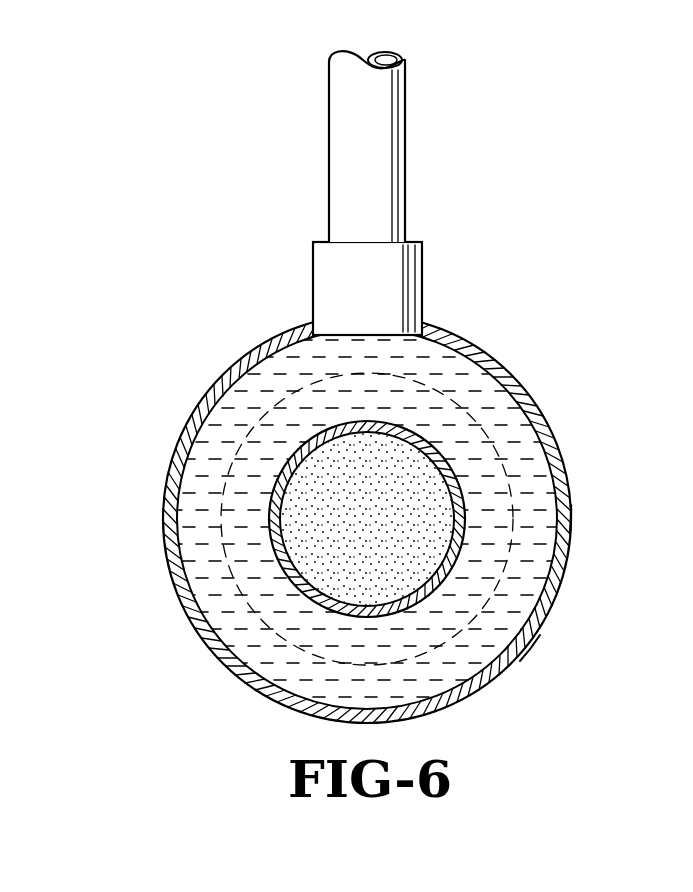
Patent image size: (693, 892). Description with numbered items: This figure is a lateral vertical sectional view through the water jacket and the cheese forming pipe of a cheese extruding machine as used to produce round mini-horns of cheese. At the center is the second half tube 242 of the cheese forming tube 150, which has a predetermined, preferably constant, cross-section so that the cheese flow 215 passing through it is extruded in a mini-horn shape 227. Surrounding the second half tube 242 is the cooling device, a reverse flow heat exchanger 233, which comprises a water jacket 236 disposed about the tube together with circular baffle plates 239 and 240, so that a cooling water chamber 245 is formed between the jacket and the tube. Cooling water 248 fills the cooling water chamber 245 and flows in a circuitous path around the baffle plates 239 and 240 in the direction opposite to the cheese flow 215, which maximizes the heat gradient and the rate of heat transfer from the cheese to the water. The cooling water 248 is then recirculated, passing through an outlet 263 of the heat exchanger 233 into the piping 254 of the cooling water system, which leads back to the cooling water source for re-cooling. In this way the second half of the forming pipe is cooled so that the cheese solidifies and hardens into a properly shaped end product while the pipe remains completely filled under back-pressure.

The cheese forming tube 150 is at (268, 545).
The cheese flow 215 is at (337, 483).
The mini-horn shape 227 is at (312, 432).
The reverse flow heat exchanger 233 is at (515, 350).
The water jacket 236 is at (565, 462).
The circular baffle plate 239 is at (545, 513).
The circular baffle plate 240 is at (492, 553).
The second half tube 242 is at (277, 497).
The cooling water chamber 245 is at (515, 613).
The cooling water 248 is at (512, 422).
The piping 254 is at (405, 135).
The outlet 263 is at (422, 278).